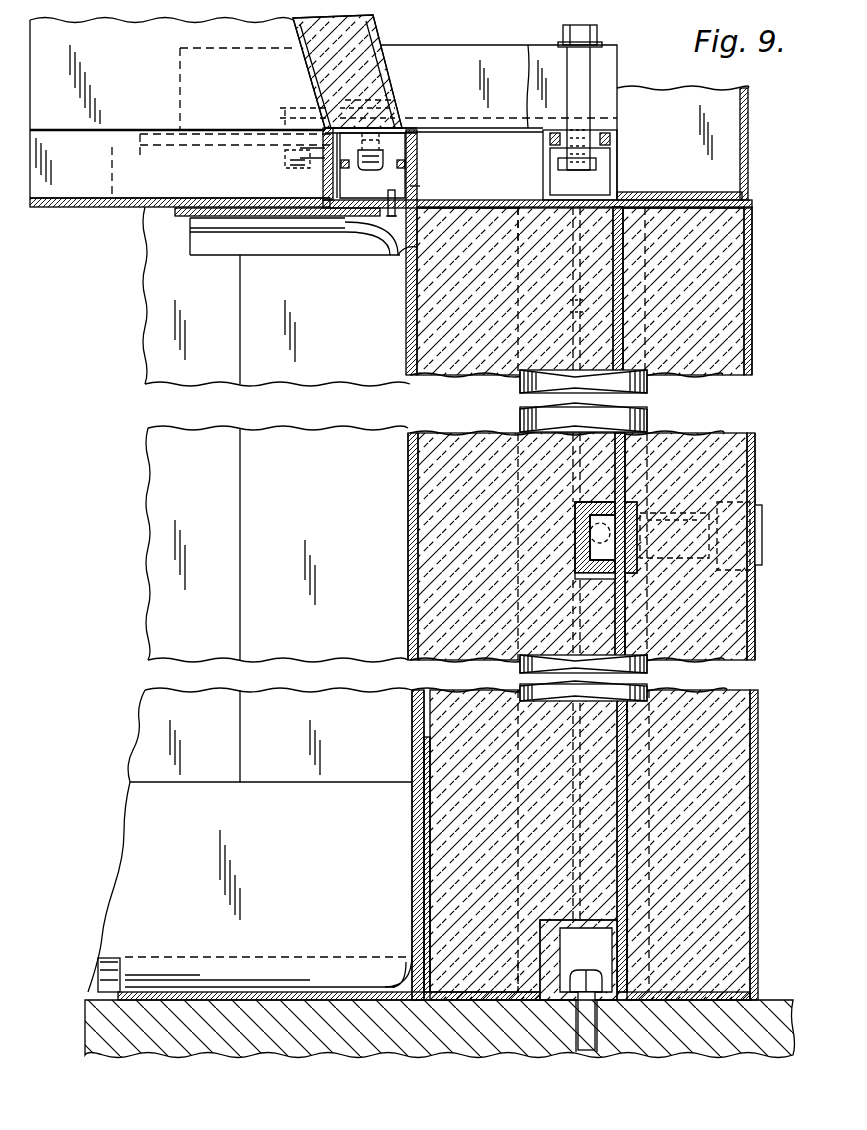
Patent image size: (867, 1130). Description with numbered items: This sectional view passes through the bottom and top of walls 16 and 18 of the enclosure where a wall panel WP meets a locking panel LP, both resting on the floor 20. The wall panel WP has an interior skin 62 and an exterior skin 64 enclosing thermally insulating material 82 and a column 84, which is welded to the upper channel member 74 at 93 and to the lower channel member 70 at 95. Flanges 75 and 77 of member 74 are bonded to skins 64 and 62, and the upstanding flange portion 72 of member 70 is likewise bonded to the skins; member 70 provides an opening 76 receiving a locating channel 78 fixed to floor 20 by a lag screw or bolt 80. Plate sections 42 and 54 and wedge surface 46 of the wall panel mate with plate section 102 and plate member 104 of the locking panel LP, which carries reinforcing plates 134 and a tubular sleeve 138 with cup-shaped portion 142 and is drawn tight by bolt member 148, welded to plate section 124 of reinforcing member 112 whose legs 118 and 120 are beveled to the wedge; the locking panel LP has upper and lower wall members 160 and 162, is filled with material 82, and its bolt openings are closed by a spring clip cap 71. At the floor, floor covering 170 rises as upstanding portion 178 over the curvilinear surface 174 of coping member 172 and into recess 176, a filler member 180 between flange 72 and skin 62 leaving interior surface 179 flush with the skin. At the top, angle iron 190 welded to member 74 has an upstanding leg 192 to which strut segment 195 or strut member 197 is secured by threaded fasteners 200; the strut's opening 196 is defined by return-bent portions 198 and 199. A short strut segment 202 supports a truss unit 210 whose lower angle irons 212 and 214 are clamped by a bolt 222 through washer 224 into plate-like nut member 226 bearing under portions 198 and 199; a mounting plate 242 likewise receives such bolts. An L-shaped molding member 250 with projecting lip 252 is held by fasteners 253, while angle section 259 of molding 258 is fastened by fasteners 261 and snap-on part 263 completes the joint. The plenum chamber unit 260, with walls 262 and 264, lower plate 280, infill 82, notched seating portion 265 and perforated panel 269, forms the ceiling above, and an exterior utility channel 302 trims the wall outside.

The inner wall 264 is at (378, 42).
The plenum chamber wall 262 is at (300, 58).
The plenum chamber unit 260 is at (395, 82).
The lower plate or wall member 280 is at (398, 100).
The longitudinally extending opening 196 is at (398, 118).
The two-hole mounting plate 242 is at (282, 118).
The bolt 222 is at (600, 30).
The washer 224 is at (602, 44).
The truss unit 210 is at (478, 46).
The lower angle iron 212 is at (504, 56).
The lower angle iron 214 is at (546, 48).
The exteriorly facing channel 302 is at (752, 134).
The return-bent portion 199 is at (420, 146).
The return-bent portion 198 is at (548, 148).
The threaded plate-like nut member 226 is at (420, 160).
The threaded fasteners 200 is at (420, 173).
The upstanding leg 192 is at (110, 165).
The angle iron 190 is at (470, 198).
The short channel-shaped strut segment 202 is at (617, 186).
The threaded fasteners 253 is at (288, 170).
The channel-shaped strut member 197 is at (325, 187).
The threaded fasteners 261 is at (388, 198).
The notched seating portion 265 is at (58, 128).
The strut member segments 195 is at (168, 136).
The perforated panel 269 is at (70, 209).
The molding 258 is at (222, 258).
The molding part 263 is at (270, 258).
The seating flange or projecting lip 252 is at (282, 218).
The L-shaped molding member 250 is at (340, 220).
The angle section 259 is at (392, 250).
The thermally insulating material 82 is at (318, 88).
The upper channel-shaped structural member 74 is at (480, 214).
The weld 93 is at (512, 226).
The flange 77 is at (422, 250).
The upper wall defining structural member 160 is at (705, 212).
The flange 75 is at (754, 236).
The wall 18 is at (759, 300).
The diagonal wedge surface 46 is at (575, 286).
The plate section 42 is at (625, 285).
The plate section 54 is at (573, 308).
The interior skin member 62 is at (406, 325).
The plate section 102 is at (572, 335).
The plate member 104 is at (625, 336).
The column 84 is at (650, 395).
The exterior skin member 64 is at (757, 430).
The locking panel unit LP is at (760, 472).
The wall panel section WP is at (406, 527).
The wall 16 is at (140, 572).
The sidewall or leg 118 is at (585, 505).
The plate section 124 is at (583, 520).
The bolt member 148 is at (590, 533).
The channel-shaped structural reinforcing member 112 is at (578, 562).
The sidewall or leg 120 is at (585, 578).
The reinforcing plates 134 is at (665, 512).
The tubular bolt-receiving sleeve 138 is at (684, 514).
The cup-shaped portion 142 is at (730, 502).
The spring clip cap 71 is at (763, 540).
The filler member 180 is at (430, 756).
The upstanding flange portion 72 is at (430, 918).
The interior surface 179 is at (412, 872).
The upstanding portion 178 is at (418, 896).
The recess 176 is at (426, 928).
The curvilinear surface 174 is at (406, 985).
The coping member 172 is at (440, 988).
The floor covering 170 is at (162, 990).
The longitudinally extending opening 76 is at (562, 926).
The locating channel 78 is at (612, 948).
The fixing means 80 is at (592, 976).
The channel-shaped structural member 70 is at (472, 990).
The weld 95 is at (517, 990).
The lower wall defining structural member 162 is at (694, 992).
The floor or supporting surface 20 is at (85, 1025).